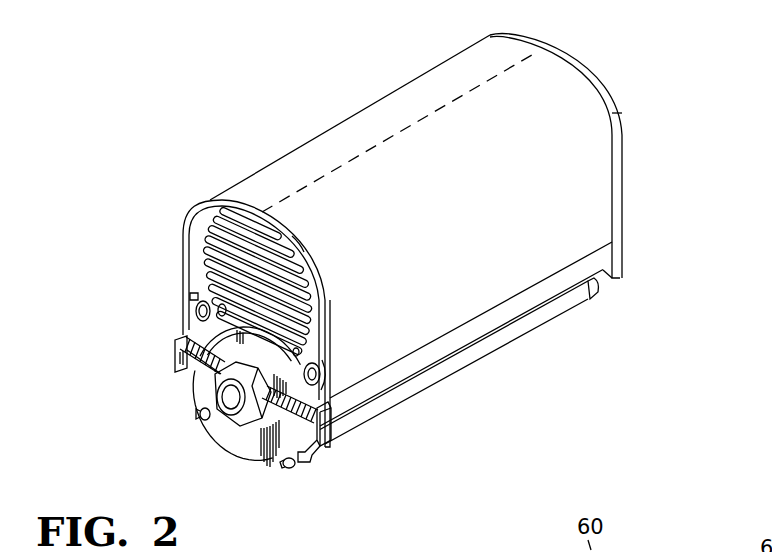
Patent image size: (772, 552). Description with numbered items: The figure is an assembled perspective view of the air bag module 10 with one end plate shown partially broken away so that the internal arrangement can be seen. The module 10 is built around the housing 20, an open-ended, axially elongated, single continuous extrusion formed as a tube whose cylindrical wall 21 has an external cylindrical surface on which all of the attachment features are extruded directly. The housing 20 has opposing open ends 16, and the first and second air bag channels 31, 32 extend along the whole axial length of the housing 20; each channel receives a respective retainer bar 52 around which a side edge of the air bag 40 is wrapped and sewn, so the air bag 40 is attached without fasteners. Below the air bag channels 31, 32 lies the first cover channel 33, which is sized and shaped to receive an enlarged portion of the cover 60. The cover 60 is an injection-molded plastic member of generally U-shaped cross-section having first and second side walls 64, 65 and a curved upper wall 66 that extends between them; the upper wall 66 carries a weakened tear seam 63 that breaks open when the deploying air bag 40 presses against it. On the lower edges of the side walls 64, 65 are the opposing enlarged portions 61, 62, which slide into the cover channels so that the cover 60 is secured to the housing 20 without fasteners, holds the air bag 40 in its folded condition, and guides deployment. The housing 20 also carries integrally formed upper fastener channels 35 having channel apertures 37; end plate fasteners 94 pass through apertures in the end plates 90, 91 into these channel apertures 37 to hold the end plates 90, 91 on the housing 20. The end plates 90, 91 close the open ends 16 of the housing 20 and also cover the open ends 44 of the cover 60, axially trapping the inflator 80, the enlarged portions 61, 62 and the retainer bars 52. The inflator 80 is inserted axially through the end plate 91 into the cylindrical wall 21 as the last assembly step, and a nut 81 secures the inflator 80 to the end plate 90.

The air bag module 10 is at (316, 126).
The open ends 16 is at (330, 405).
The housing 20 is at (186, 348).
The cylindrical wall 21 is at (207, 362).
The first air bag channel 31 is at (321, 372).
The second air bag channel 32 is at (193, 297).
The first cover channel 33 is at (455, 348).
The upper fastener channels 35 is at (220, 305).
The channel apertures 37 is at (297, 350).
The air bag 40 is at (245, 238).
The open ends of the cover 44 is at (297, 232).
The air bag retainer bars 52 is at (198, 311).
The cover 60 is at (587, 107).
The first enlarged portion 61 is at (322, 417).
The second enlarged portion 62 is at (187, 332).
The weakened tear seam 63 is at (450, 100).
The first side wall 64 is at (577, 222).
The second side wall 65 is at (188, 268).
The curved upper wall 66 is at (552, 65).
The inflator 80 is at (280, 392).
The nut 81 is at (265, 440).
The first end plate 90 is at (243, 437).
The second end plate 91 is at (612, 113).
The end plate fasteners 94 is at (200, 413).